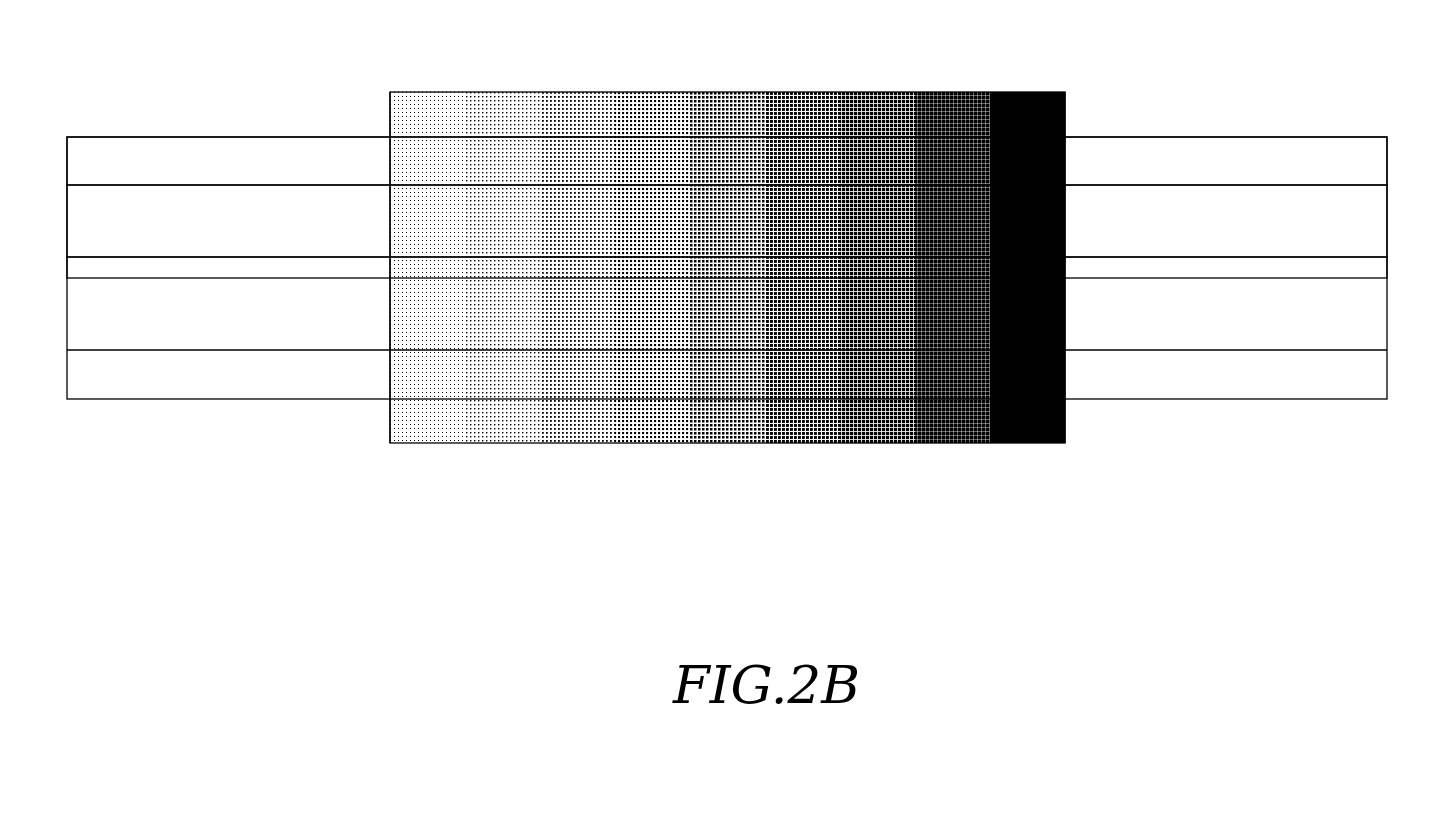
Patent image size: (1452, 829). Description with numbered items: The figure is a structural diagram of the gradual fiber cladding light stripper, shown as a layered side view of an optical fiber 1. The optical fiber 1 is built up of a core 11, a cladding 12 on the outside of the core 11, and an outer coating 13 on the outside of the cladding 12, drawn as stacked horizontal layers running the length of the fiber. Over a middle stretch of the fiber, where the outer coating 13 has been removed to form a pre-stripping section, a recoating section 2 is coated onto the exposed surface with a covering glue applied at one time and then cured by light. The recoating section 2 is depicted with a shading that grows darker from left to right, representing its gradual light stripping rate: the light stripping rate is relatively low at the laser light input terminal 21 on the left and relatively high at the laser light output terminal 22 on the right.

The optical fiber 1 is at (752, 223).
The core 11 is at (1373, 267).
The cladding 12 is at (1370, 228).
The outer coating 13 is at (1146, 155).
The recoating section 2 is at (583, 108).
The laser light input terminal 21 is at (390, 363).
The laser light output terminal 22 is at (1065, 418).